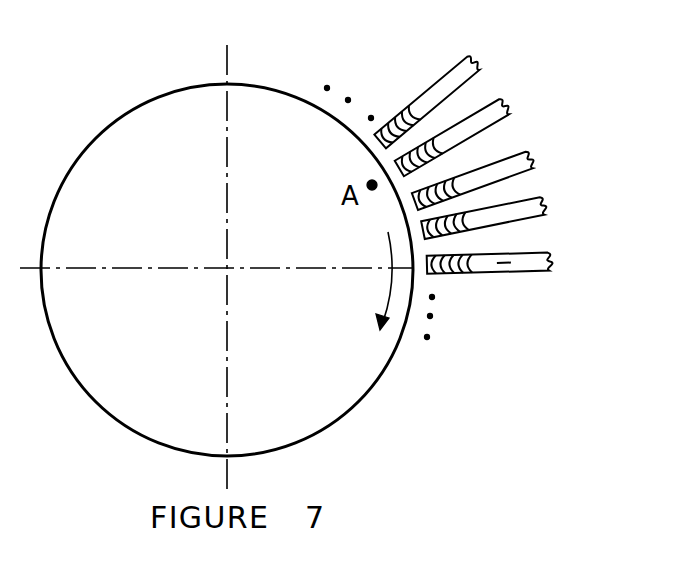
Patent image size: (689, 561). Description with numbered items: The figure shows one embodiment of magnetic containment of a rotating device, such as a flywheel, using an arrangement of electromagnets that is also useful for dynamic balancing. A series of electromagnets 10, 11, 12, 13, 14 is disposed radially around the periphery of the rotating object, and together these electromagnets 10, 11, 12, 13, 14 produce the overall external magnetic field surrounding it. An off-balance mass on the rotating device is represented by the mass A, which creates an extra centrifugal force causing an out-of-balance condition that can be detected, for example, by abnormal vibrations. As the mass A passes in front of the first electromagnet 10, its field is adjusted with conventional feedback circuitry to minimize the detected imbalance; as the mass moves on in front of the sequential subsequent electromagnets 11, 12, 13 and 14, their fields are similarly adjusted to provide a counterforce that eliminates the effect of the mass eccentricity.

The electromagnet 10 is at (442, 95).
The electromagnet 11 is at (469, 133).
The electromagnet 12 is at (490, 177).
The electromagnet 13 is at (505, 217).
The electromagnet 14 is at (510, 265).